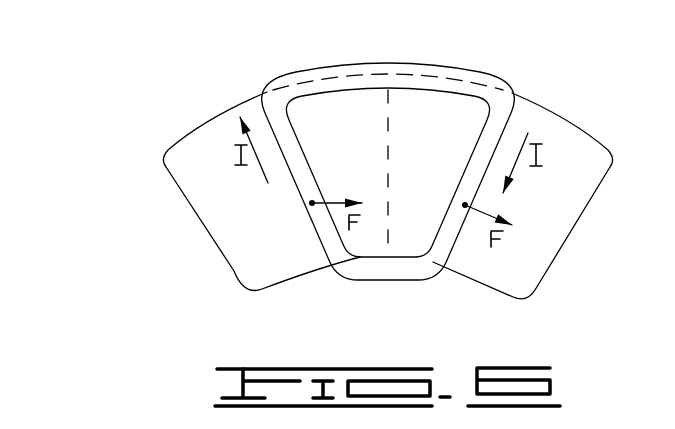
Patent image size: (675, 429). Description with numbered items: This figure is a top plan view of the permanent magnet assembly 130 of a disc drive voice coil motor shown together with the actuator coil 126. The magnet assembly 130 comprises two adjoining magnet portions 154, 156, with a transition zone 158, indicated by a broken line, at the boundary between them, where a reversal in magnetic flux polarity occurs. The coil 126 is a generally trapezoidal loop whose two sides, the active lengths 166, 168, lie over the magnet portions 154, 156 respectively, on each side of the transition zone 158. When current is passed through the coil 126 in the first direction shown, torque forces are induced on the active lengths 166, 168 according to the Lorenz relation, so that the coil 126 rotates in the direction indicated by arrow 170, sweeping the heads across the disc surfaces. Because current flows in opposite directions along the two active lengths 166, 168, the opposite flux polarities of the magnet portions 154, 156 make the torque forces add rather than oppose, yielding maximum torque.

The permanent magnet assembly 130 is at (354, 205).
The actuator coil 126 is at (373, 280).
The magnet portion 154 is at (211, 240).
The magnet portion 156 is at (573, 233).
The transition zone 158 is at (390, 160).
The active length 166 is at (321, 229).
The active length 168 is at (452, 242).
The arrow 170 is at (447, 48).